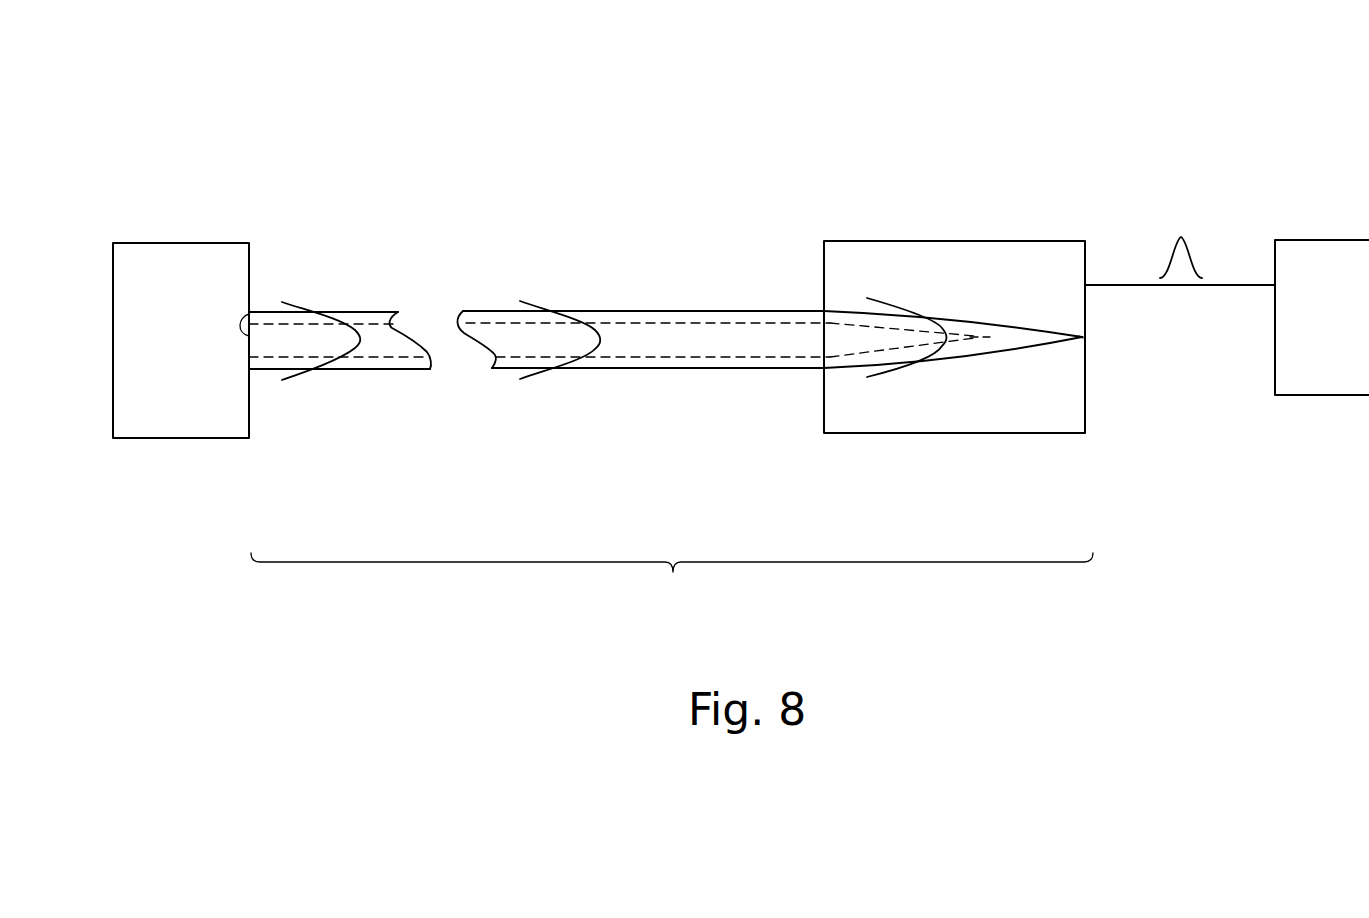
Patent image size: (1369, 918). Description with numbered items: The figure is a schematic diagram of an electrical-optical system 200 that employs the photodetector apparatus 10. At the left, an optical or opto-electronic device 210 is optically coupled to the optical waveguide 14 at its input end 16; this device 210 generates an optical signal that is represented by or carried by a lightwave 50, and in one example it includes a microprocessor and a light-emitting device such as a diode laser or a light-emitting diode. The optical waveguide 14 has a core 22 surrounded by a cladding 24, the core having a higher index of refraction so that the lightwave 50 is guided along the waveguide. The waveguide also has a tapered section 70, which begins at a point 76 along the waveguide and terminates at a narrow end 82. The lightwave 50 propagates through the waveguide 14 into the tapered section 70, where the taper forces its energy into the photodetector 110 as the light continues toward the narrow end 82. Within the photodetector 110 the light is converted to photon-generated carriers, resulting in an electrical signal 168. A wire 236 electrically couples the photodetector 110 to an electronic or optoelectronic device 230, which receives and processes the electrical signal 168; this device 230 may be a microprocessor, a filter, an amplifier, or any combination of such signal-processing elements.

The photodetector apparatus 10 is at (672, 576).
The optical waveguide 14 is at (322, 382).
The input end 16 is at (252, 312).
The core 22 is at (762, 340).
The cladding 24 is at (637, 369).
The lightwave 50 is at (334, 296).
The tapered section 70 is at (848, 375).
The point 76 is at (825, 346).
The narrow end 82 is at (1081, 339).
The photodetector 110 is at (1030, 468).
The electrical signal 168 is at (1181, 237).
The electrical-optical system 200 is at (1010, 73).
The optical or opto-electronic device 210 is at (182, 243).
The electronic or optoelectronic device 230 is at (1322, 240).
The wire 236 is at (1181, 286).